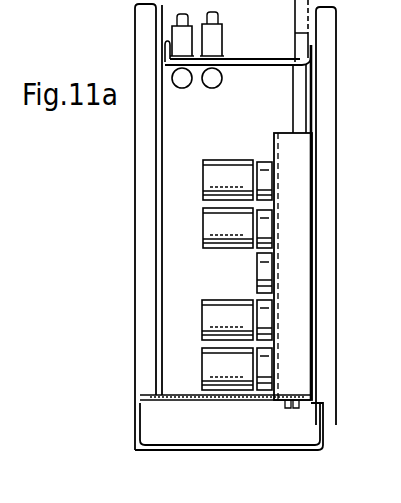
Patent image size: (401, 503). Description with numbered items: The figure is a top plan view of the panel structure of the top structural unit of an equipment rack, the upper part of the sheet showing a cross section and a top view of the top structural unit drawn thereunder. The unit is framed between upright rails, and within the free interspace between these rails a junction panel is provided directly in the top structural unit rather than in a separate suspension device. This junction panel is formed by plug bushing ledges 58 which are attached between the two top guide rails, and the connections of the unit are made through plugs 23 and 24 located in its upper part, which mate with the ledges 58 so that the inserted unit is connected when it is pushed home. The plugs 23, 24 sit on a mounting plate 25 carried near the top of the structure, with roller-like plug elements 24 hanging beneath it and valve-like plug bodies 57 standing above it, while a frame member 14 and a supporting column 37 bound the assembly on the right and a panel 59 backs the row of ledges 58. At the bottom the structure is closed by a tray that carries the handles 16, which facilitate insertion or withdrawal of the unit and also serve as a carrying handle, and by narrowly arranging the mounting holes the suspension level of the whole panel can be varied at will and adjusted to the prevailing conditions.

The frame member 14 is at (304, 97).
The handles 16 is at (327, 450).
The plugs 23 is at (214, 173).
The plugs 24 is at (211, 80).
The mounting plate 25 is at (253, 66).
The support column 37 is at (358, 216).
The valves 57 is at (213, 39).
The plug bushing ledges 58 is at (264, 225).
The panel 59 is at (295, 345).